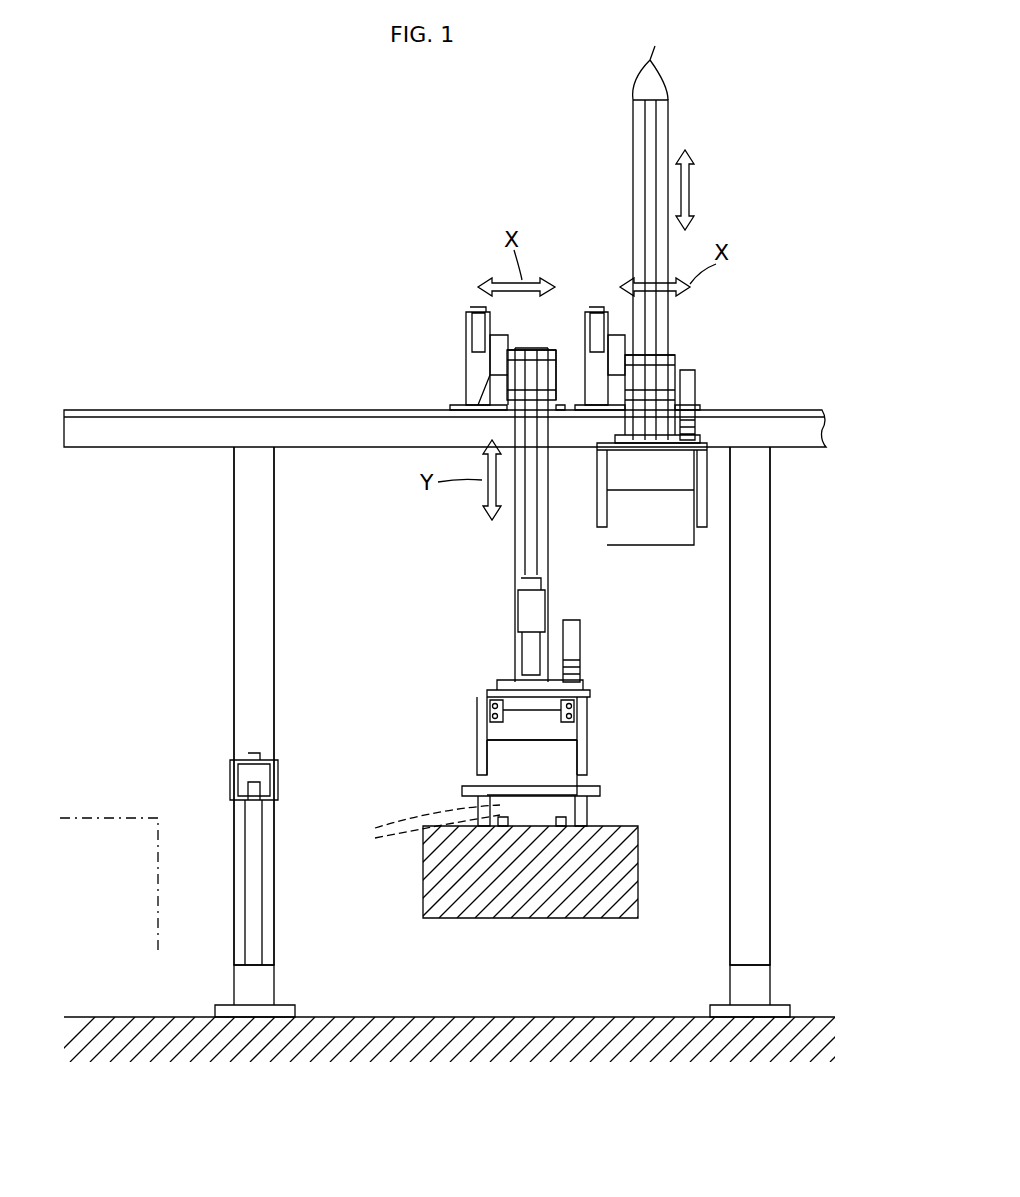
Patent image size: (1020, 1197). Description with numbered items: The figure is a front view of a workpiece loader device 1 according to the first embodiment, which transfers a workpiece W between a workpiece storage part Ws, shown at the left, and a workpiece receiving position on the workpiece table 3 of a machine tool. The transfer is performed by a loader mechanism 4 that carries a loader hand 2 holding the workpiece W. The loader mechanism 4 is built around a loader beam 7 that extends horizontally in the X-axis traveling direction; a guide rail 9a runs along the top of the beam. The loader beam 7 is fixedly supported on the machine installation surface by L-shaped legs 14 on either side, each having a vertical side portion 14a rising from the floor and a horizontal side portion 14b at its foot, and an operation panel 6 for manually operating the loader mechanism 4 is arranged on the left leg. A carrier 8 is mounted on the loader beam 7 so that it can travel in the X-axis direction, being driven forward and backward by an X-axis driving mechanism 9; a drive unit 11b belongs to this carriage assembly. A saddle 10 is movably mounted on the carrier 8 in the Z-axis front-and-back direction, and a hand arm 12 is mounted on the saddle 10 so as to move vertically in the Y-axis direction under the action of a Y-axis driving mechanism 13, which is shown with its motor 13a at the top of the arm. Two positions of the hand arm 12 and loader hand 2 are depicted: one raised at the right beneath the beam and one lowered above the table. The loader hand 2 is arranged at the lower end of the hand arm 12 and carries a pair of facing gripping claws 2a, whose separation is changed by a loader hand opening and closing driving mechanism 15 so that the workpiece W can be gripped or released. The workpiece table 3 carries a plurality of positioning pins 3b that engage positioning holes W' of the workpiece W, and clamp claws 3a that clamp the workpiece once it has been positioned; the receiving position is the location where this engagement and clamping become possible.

The workpiece loader device 1 is at (312, 176).
The loader hand 2 is at (472, 683).
The gripping claws 2a is at (486, 758).
The workpiece table 3 is at (423, 880).
The clamp claws 3a is at (463, 790).
The positioning pins 3b is at (505, 826).
The loader mechanism 4 is at (330, 268).
The operation panel 6 is at (228, 770).
The loader beam 7 is at (240, 406).
The carrier 8 is at (456, 404).
The X-axis driving mechanism 9 is at (462, 345).
The guide rail 9a is at (296, 415).
The saddle 10 is at (572, 395).
The drive unit 11b is at (468, 320).
The hand arm 12 is at (512, 592).
The Y-axis driving mechanism 13 is at (576, 398).
The motor 13a is at (440, 555).
The L-shaped legs 14 is at (230, 688).
The vertical side portions 14a is at (233, 588).
The horizontal side portions 14b is at (234, 986).
The loader hand opening and closing driving mechanism 15 is at (598, 688).
The workpiece W is at (464, 715).
The positioning holes W' is at (423, 823).
The workpiece storage part Ws is at (92, 818).